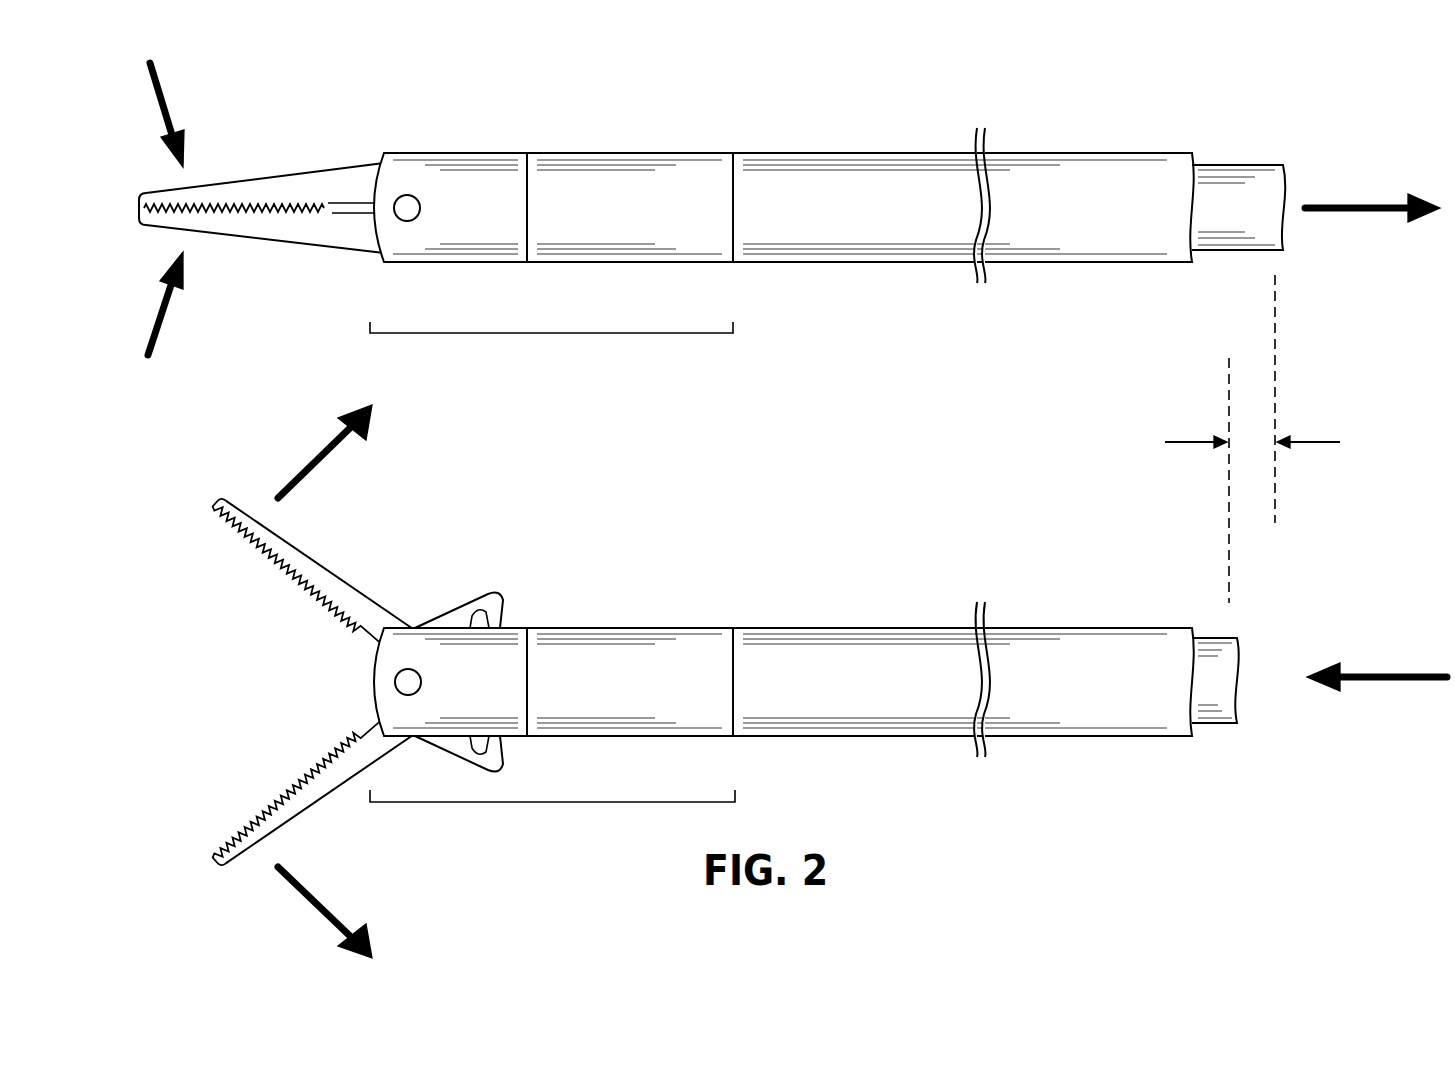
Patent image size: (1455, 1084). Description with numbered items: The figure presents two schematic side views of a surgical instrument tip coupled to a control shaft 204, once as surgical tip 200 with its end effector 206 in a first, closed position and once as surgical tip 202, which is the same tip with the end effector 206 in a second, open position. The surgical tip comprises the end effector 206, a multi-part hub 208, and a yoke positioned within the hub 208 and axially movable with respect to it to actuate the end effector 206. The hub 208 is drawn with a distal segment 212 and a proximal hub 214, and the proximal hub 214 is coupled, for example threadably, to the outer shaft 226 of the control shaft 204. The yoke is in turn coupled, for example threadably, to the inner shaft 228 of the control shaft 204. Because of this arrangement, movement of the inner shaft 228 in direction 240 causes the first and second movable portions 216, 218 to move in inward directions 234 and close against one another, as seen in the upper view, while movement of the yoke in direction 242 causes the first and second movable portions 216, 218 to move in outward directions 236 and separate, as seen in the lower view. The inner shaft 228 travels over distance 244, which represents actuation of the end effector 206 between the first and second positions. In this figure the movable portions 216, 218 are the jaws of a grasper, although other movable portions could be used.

The surgical tip 200 is at (707, 92).
The surgical tip 202 is at (707, 550).
The control shaft 204 is at (918, 127).
The end effector 206 is at (141, 256).
The multi-part hub 208 is at (565, 334).
The first housing segment 212 is at (417, 152).
The proximal hub 214 is at (642, 152).
The first movable portion 216 is at (247, 178).
The second movable portion 218 is at (248, 235).
The outer shaft 226 is at (862, 154).
The inner shaft 228 is at (1228, 163).
The inward directions 234 is at (162, 82).
The outward directions 236 is at (297, 472).
The direction 240 is at (1360, 213).
The direction 242 is at (1402, 683).
The distance 244 is at (1303, 443).